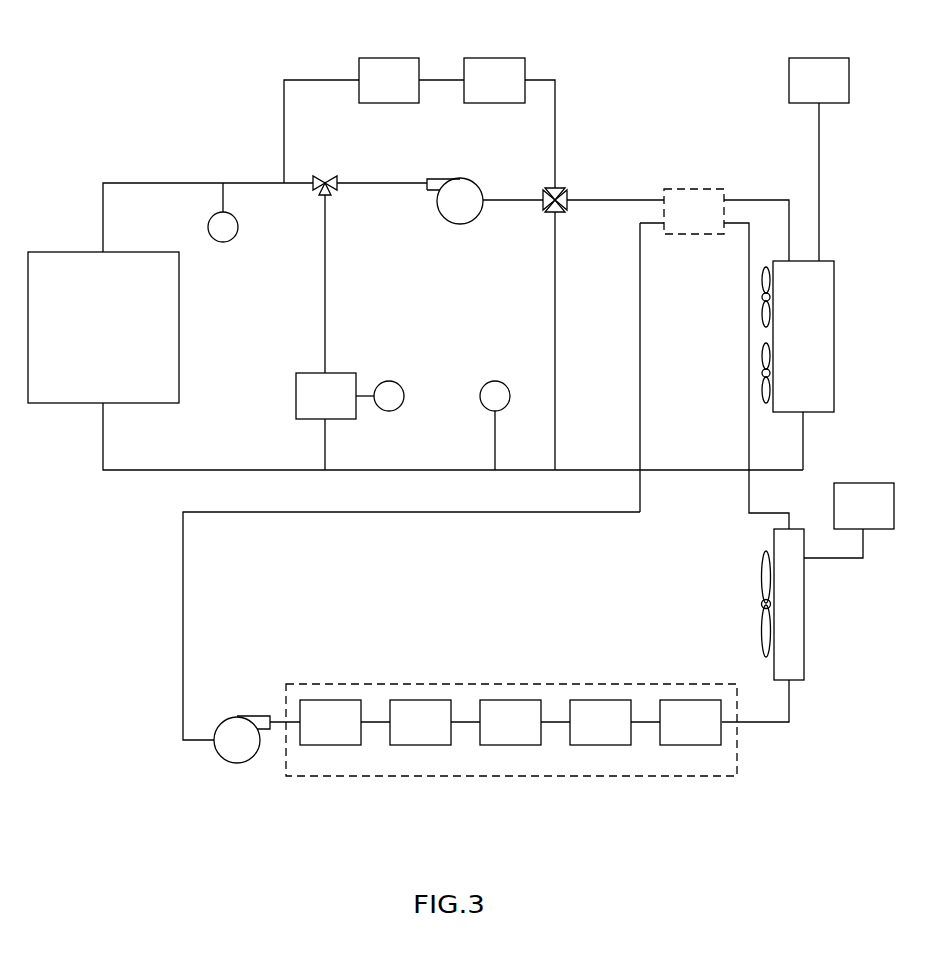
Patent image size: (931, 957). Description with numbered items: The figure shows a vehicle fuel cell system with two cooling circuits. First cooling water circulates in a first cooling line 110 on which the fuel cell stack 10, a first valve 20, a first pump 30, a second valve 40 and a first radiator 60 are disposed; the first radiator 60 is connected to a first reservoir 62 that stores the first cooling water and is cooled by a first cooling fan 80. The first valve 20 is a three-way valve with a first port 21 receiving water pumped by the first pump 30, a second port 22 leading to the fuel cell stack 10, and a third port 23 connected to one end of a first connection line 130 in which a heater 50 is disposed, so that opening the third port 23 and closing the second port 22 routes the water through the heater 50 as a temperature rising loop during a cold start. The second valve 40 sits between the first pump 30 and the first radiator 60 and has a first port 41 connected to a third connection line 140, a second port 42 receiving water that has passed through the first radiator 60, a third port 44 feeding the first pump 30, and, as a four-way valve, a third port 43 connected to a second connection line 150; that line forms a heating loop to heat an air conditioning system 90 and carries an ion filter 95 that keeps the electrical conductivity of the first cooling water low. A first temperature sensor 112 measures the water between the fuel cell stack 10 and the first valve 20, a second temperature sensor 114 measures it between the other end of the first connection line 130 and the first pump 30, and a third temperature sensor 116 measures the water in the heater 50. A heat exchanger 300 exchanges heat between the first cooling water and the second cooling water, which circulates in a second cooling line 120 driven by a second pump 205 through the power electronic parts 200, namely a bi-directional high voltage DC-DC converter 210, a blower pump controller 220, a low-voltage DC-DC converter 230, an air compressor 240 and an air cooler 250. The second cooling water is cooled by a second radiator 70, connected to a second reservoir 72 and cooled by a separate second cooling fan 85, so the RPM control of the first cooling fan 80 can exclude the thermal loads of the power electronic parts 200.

The fuel cell stack 10 is at (68, 252).
The first valve 20 is at (324, 183).
The first port 21 is at (337, 186).
The second port 22 is at (313, 186).
The third port 23 is at (320, 196).
The first pump 30 is at (460, 188).
The second valve 40 is at (557, 201).
The first port 41 is at (552, 214).
The second port 42 is at (567, 204).
The third port 43 is at (548, 190).
The third port 44 is at (543, 204).
The heater 50 is at (296, 397).
The first radiator 60 is at (834, 336).
The first reservoir 62 is at (817, 58).
The second radiator 70 is at (804, 630).
The second reservoir 72 is at (858, 483).
The first cooling fan 80 is at (762, 372).
The second cooling fan 85 is at (761, 604).
The air conditioning system 90 is at (386, 58).
The ion filter 95 is at (491, 58).
The first cooling line 110 is at (160, 183).
The first temperature sensor 112 is at (223, 242).
The second temperature sensor 114 is at (495, 381).
The third temperature sensor 116 is at (389, 381).
The second cooling line 120 is at (183, 625).
The first connection line 130 is at (325, 445).
The third connection line 140 is at (555, 393).
The second connection line 150 is at (290, 80).
The power electronic parts 200 is at (543, 712).
The second pump 205 is at (245, 716).
The bi-directional high voltage DC-DC converter 210 is at (330, 700).
The blower pump controller 220 is at (420, 700).
The low-voltage DC-DC converter 230 is at (510, 700).
The air compressor 240 is at (600, 700).
The air cooler 250 is at (690, 700).
The heat exchanger 300 is at (694, 189).